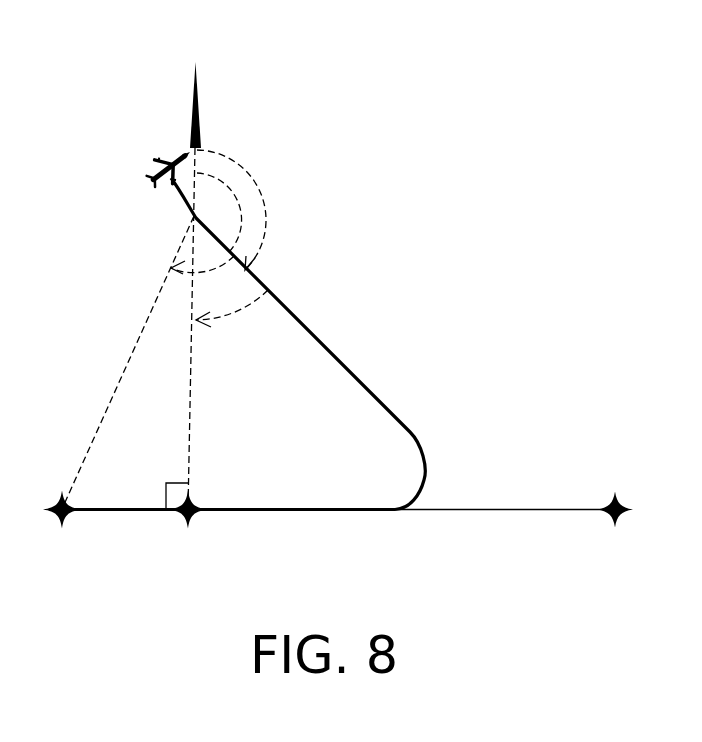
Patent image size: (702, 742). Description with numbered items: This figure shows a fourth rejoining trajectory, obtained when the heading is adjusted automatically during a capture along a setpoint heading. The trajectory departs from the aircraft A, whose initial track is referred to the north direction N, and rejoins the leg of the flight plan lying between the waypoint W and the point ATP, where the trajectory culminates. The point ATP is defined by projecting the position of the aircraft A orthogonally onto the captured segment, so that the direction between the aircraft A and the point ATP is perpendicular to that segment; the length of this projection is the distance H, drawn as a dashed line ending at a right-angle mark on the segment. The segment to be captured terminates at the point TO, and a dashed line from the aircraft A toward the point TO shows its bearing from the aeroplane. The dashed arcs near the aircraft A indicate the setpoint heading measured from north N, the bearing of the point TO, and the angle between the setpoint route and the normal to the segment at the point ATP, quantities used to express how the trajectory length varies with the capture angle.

The aircraft A is at (153, 176).
The north reference N is at (195, 94).
The distance from aircraft to point ATP H is at (207, 328).
The terminal point of the segment TO is at (62, 530).
The along-track point ATP is at (188, 530).
The waypoint W is at (615, 529).